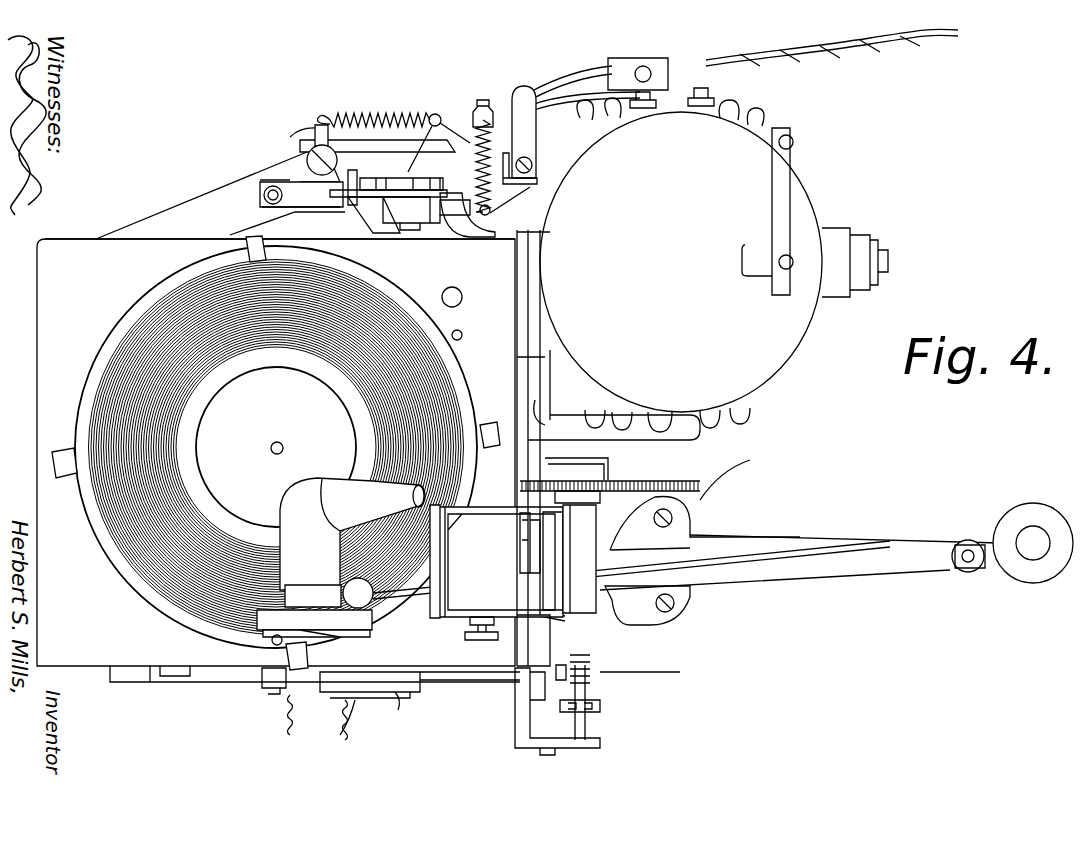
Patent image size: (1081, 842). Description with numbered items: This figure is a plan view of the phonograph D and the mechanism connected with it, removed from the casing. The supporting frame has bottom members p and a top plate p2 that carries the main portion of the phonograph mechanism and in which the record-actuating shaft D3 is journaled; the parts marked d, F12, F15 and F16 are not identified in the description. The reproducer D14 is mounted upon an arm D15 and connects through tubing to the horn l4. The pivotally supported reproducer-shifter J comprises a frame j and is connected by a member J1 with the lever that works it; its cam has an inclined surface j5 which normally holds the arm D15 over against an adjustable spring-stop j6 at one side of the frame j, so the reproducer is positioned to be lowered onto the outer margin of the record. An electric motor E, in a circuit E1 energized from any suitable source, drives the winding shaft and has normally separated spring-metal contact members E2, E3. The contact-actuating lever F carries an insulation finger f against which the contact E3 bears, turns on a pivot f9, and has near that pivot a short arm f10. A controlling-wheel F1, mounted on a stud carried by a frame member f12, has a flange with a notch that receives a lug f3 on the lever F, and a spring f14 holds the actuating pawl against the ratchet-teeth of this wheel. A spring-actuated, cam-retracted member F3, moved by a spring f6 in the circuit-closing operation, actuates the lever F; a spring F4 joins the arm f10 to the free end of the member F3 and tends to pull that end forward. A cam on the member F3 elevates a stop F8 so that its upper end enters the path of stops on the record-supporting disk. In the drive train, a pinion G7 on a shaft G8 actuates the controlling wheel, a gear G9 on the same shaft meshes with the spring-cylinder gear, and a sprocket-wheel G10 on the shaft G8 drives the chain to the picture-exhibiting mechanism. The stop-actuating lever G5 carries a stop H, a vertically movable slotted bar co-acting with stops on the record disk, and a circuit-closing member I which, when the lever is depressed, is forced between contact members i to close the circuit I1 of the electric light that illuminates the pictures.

The phonograph D is at (260, 460).
The top plate p2 is at (280, 275).
The bottom members p is at (205, 194).
The record-actuating shaft D3 is at (277, 444).
The record clips d is at (245, 250).
The horn l4 is at (352, 534).
The reproducer D14 is at (258, 612).
The inclined surface j5 is at (440, 548).
The reproducer-shifter J is at (500, 562).
The connecting member J1 is at (522, 560).
The frame j is at (579, 559).
The adjustable spring-stop j6 is at (505, 600).
The cam-retracted member F3 is at (545, 398).
The stop F8 is at (462, 335).
The electric motor E is at (714, 245).
The electric circuit E1 is at (822, 68).
The contact member E2 is at (588, 72).
The contact member E3 is at (542, 88).
The insulation finger f is at (520, 135).
The contact-actuating lever F is at (355, 138).
The short arm f10 is at (297, 130).
The spring F4 is at (430, 116).
The lug f3 is at (474, 128).
The spring f6 is at (484, 96).
The pivot f9 is at (306, 155).
The spring f14 is at (258, 200).
The controlling-wheel F1 is at (388, 180).
The plate F12 is at (365, 226).
The plate F16 is at (395, 222).
The frame member f12 is at (448, 216).
The hanger F15 is at (462, 224).
The pinion G7 is at (608, 484).
The gear G9 is at (702, 542).
The arm D15 is at (745, 570).
The shaft G8 is at (600, 672).
The sprocket-wheel G10 is at (600, 706).
The stop-actuating lever G5 is at (478, 680).
The stop H is at (268, 675).
The circuit-closing member I is at (374, 699).
The light circuit I1 is at (330, 740).
The contact members i is at (398, 700).